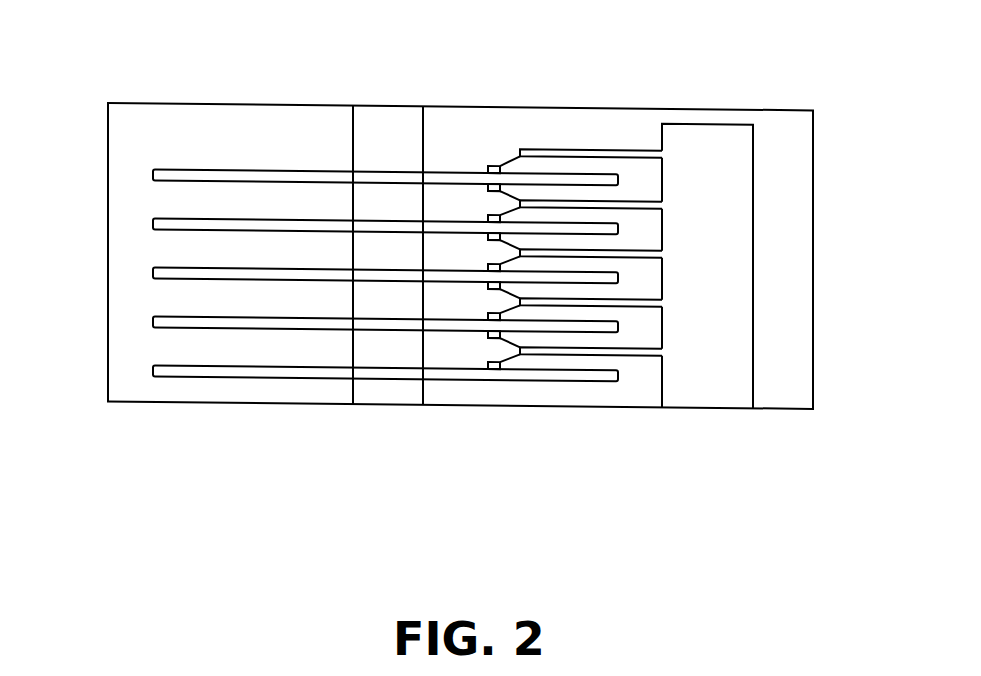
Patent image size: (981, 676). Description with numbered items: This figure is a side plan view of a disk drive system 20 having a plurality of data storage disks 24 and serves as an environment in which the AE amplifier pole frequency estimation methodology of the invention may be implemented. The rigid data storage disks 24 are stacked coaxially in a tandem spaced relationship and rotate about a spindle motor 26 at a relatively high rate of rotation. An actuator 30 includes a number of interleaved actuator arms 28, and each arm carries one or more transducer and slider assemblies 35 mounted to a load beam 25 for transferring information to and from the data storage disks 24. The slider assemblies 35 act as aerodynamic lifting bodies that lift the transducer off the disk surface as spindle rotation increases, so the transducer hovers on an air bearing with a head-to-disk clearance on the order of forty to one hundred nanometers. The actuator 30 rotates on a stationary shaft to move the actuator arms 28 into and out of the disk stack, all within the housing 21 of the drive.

The disk drive system 20 is at (458, 238).
The substrate 21 is at (813, 297).
The data storage disks 24 is at (153, 174).
The load beam 25 is at (508, 160).
The spindle motor 26 is at (382, 396).
The actuator arms 28 is at (573, 148).
The actuator 30 is at (707, 381).
The slider assemblies 35 is at (488, 165).